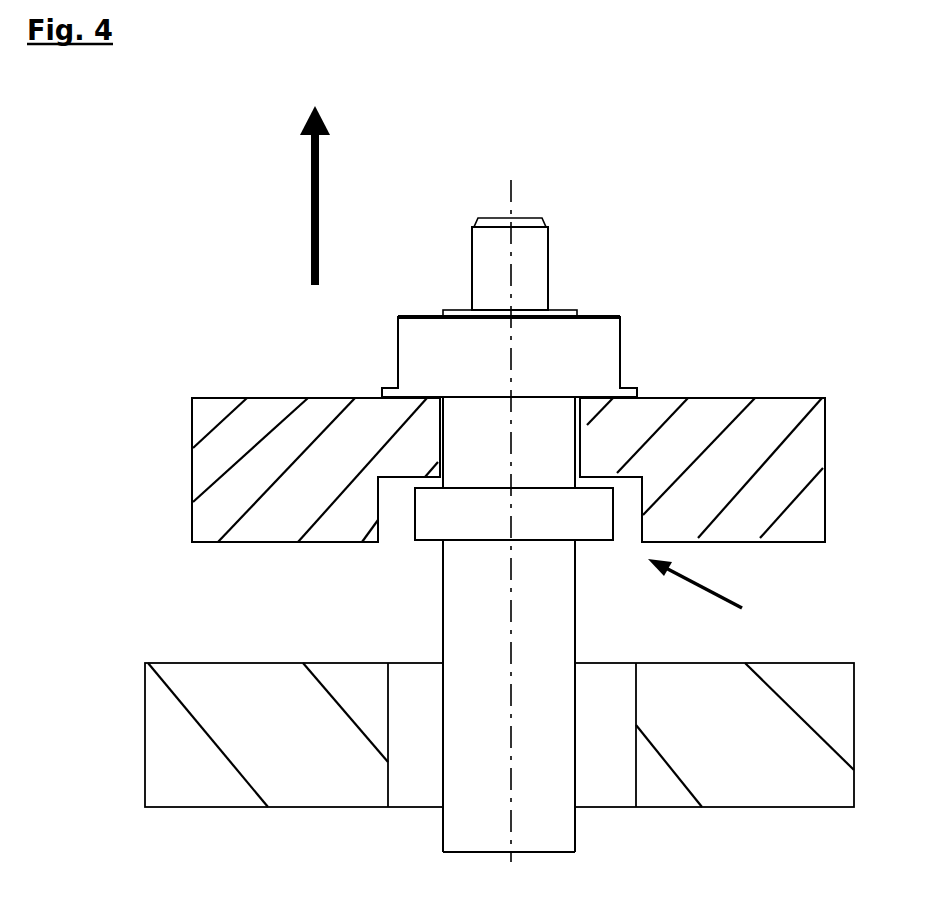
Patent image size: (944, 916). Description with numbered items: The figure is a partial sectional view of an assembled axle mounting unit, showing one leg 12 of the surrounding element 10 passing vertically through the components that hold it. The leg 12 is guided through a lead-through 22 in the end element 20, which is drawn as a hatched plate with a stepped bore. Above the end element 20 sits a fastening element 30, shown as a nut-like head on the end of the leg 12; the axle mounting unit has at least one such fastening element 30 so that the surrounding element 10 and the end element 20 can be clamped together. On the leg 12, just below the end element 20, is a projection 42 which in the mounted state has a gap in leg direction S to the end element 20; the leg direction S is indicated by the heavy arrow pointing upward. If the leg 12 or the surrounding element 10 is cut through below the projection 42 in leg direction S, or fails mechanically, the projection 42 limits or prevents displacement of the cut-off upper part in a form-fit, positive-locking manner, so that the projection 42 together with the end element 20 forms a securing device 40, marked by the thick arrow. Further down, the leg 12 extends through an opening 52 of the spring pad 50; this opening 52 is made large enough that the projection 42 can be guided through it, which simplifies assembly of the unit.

The surrounding element 10 is at (609, 563).
The leg 12 is at (563, 813).
The end element 20 is at (258, 415).
The lead-through 22 is at (439, 438).
The fastening element 30 is at (578, 375).
The securing device 40 is at (716, 595).
The projection 42 is at (432, 518).
The spring pad 50 is at (307, 782).
The opening 52 is at (410, 770).
The leg direction S is at (311, 200).